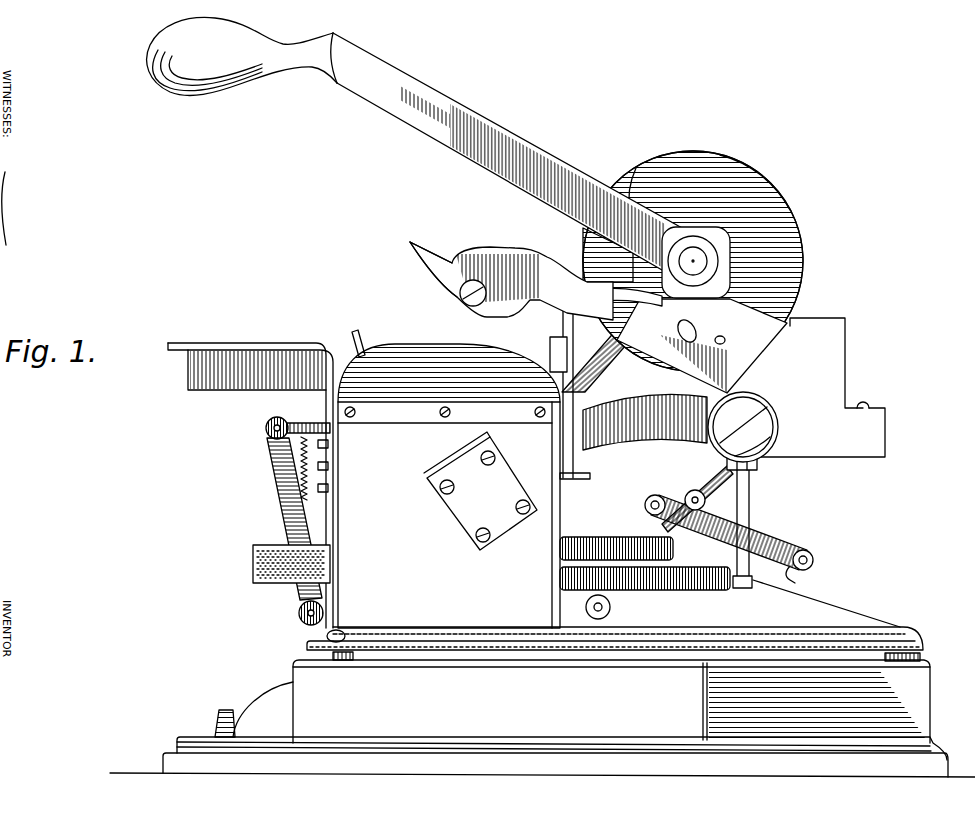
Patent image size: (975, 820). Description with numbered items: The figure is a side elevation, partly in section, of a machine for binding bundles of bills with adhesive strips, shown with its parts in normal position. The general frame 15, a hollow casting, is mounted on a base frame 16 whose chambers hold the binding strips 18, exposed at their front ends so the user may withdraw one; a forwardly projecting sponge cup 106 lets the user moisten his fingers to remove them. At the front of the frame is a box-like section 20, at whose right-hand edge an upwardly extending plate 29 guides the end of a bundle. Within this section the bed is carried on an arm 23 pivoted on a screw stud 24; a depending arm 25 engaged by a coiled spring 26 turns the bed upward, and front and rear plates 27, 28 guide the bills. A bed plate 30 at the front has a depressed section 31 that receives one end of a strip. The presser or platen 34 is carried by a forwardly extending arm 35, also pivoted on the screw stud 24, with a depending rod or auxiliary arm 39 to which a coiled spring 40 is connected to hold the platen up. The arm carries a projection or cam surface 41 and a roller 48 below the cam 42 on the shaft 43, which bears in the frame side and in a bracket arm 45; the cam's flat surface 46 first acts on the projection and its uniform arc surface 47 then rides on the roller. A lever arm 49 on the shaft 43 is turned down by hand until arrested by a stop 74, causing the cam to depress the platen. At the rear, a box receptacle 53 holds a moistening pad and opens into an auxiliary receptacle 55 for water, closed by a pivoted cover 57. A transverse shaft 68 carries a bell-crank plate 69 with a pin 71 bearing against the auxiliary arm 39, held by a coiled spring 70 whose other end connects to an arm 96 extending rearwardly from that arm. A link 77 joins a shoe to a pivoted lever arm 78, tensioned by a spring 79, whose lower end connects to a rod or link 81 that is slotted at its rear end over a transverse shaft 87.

The general frame 15 is at (826, 603).
The base frame 16 is at (542, 702).
The binding strip 18 is at (240, 708).
The box-like section 20 is at (327, 636).
The arm 23 is at (624, 446).
The screw stud 24 is at (763, 422).
The depending arm 25 is at (751, 525).
The coiled spring 26 is at (668, 582).
The front plate 27 is at (352, 331).
The rear plate 28 is at (550, 352).
The plate 29 is at (434, 344).
The bed plate 30 is at (268, 337).
The depressed section 31 is at (236, 392).
The presser or platen 34 is at (443, 272).
The arm 35 is at (487, 253).
The depending rod or auxiliary arm 39 is at (730, 520).
The coiled spring 40 is at (614, 540).
The projection or cam surface 41 is at (585, 262).
The cam 42 is at (790, 247).
The shaft 43 is at (705, 262).
The bracket arm 45 is at (718, 286).
The flat surface 46 is at (628, 200).
The uniform surface 47 is at (752, 172).
The roller 48 is at (700, 307).
The lever arm 49 is at (520, 142).
The box receptacle 53 is at (847, 348).
The auxiliary receptacle 55 is at (886, 432).
The pivoted cover 57 is at (868, 404).
The transverse shaft 68 is at (782, 438).
The bell-crank plate 69 is at (690, 505).
The coiled spring 70 is at (793, 578).
The pin 71 is at (705, 508).
The stop 74 is at (428, 482).
The link 77 is at (297, 423).
The pivoted lever arm 78 is at (296, 488).
The spring 79 is at (300, 455).
The rod or link 81 is at (299, 614).
The transverse shaft 87 is at (610, 610).
The arm 96 is at (812, 560).
The sponge cup or receptacle 106 is at (253, 550).